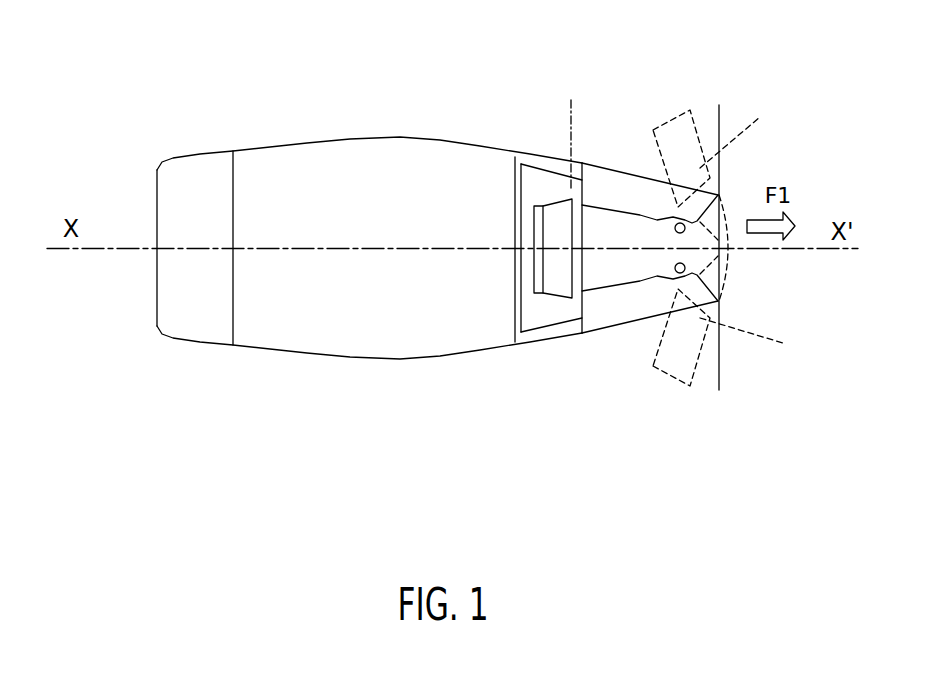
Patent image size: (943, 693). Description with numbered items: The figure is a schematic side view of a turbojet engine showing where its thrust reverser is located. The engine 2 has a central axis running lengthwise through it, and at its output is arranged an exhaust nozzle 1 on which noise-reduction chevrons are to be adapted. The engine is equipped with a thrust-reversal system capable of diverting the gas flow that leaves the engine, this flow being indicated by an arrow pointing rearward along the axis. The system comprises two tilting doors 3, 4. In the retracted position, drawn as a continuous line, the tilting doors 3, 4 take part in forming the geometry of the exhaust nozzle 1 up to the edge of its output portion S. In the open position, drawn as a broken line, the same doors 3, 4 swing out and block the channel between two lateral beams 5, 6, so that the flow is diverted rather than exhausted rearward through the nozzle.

The exhaust nozzle 1 is at (577, 72).
The engine 2 is at (378, 160).
The tilting door 3 is at (627, 188).
The tilting door 4 is at (625, 310).
The lateral beam 5 is at (744, 254).
The lateral beam 6 is at (719, 248).
The output portion S is at (720, 118).